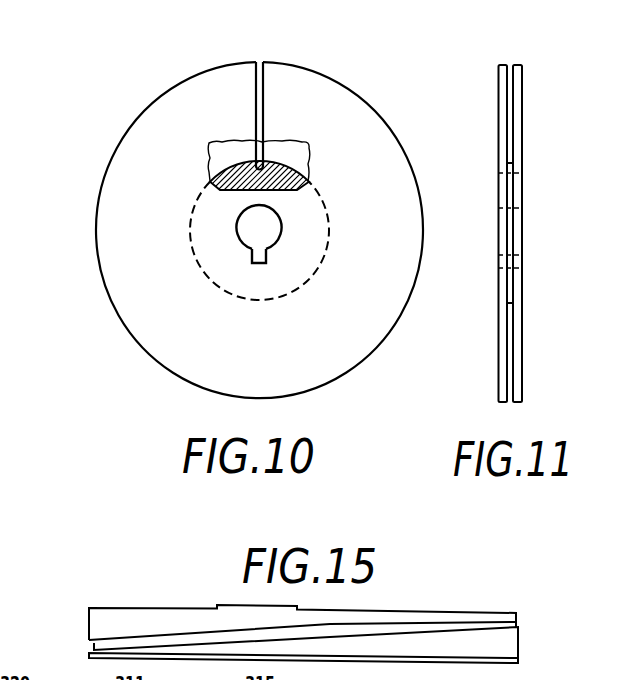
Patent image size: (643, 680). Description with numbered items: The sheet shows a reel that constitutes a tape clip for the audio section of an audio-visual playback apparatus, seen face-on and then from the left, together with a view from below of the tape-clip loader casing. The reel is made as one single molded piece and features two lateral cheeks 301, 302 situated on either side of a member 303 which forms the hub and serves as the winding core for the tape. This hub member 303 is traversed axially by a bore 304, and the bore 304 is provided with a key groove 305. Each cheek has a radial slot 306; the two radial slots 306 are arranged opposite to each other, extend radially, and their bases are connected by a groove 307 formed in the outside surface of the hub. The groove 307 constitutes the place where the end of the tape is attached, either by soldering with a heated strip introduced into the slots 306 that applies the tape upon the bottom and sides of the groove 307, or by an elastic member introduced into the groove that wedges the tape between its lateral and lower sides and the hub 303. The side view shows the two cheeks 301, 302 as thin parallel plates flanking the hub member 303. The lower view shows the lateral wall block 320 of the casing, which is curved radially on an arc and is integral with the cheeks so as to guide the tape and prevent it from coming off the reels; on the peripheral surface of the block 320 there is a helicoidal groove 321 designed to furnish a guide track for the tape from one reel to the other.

In FIG. 11, the lateral cheek 301 is at (523, 107).
In FIG. 11, the lateral cheek 302 is at (500, 108).
In FIG. 10, the member 303 is at (279, 157).
In FIG. 11, the member 303 is at (510, 292).
In FIG. 10, the bore 304 is at (267, 228).
In FIG. 10, the key groove 305 is at (265, 260).
In FIG. 10, the radial slot 306 is at (264, 80).
In FIG. 10, the groove 307 is at (256, 165).
In FIG. 15, the lateral wall block 320 is at (521, 645).
In FIG. 15, the helicoidal groove 321 is at (422, 628).